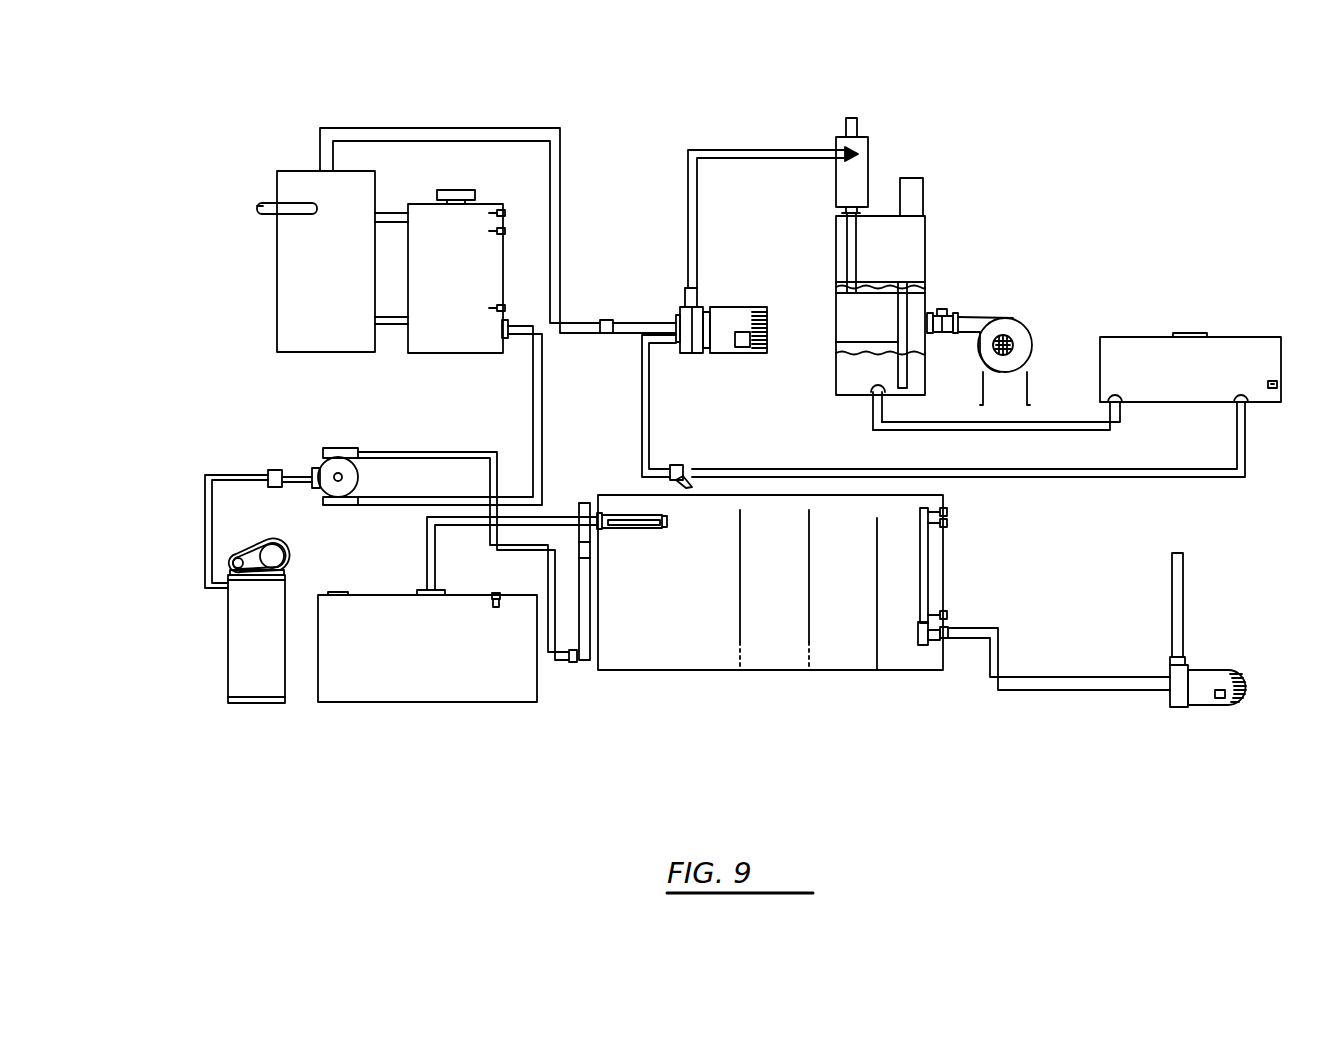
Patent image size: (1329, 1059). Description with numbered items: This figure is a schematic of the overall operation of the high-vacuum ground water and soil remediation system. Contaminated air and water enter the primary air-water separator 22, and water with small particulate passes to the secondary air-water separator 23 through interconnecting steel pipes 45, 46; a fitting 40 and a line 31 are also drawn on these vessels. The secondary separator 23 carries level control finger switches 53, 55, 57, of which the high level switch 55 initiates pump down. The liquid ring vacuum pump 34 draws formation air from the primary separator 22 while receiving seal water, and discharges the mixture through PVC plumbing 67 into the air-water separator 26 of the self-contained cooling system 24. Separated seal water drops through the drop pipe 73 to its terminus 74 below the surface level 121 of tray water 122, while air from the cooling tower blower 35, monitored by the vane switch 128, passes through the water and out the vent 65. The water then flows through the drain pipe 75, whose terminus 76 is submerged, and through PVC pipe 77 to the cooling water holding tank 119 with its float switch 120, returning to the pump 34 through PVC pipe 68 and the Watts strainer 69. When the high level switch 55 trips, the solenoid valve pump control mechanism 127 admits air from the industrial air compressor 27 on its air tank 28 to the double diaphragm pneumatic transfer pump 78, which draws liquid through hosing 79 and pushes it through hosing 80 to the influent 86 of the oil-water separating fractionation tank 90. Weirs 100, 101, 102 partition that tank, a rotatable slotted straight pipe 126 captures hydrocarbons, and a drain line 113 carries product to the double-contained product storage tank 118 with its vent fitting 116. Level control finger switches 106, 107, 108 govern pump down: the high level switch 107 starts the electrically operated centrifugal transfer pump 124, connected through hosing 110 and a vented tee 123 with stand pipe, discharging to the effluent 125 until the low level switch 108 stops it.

The primary air-water separator 22 is at (303, 305).
The secondary air-water separator 23 is at (457, 337).
The self-contained cooling system 24 is at (1062, 157).
The air-water separator 26 is at (863, 145).
The industrial air compressor 27 is at (245, 556).
The air tank 28 is at (245, 638).
The conduit 31 is at (413, 131).
The liquid ring vacuum pump 34 is at (723, 310).
The cooling tower blower 35 is at (1018, 320).
The fill port handle 40 is at (282, 207).
The interconnecting steel pipe 45 is at (387, 217).
The interconnecting steel pipe 46 is at (388, 322).
The level control finger switch 53 is at (505, 212).
The high level switch 55 is at (505, 230).
The level control finger switch 57 is at (505, 308).
The vent 65 is at (912, 185).
The PVC plumbing 67 is at (765, 153).
The PVC pipe 68 is at (648, 413).
The Watts strainer 69 is at (675, 468).
The drop pipe 73 is at (853, 242).
The drop pipe terminus 74 is at (850, 293).
The drain pipe 75 is at (835, 342).
The drain pipe terminus 76 is at (908, 392).
The PVC pipe 77 is at (1017, 428).
The double diaphragm pneumatic transfer pump 78 is at (332, 465).
The interconnecting hosing 79 is at (532, 400).
The hosing 80 is at (367, 458).
The influent 86 is at (575, 667).
The oil-water separating fractionation tank 90 is at (583, 745).
The first weir 100 is at (735, 608).
The second weir 101 is at (803, 608).
The third weir 102 is at (873, 608).
The level control finger switch 106 is at (947, 512).
The high level switch 107 is at (947, 523).
The low level switch 108 is at (947, 615).
The hosing 110 is at (998, 677).
The conduit fitting 113 is at (432, 600).
The vent fitting 116 is at (488, 607).
The double-contained product storage tank 118 is at (420, 682).
The cooling water holding tank 119 is at (1133, 353).
The float switch 120 is at (1280, 383).
The surface level 121 is at (920, 283).
The liquid 122 is at (858, 362).
The vented tee 123 is at (922, 643).
The electrically operated centrifugal transfer pump 124 is at (1213, 680).
The effluent 125 is at (1172, 567).
The straight pipe 126 is at (618, 530).
The solenoid valve pump control mechanism 127 is at (271, 470).
The vane switch 128 is at (937, 313).